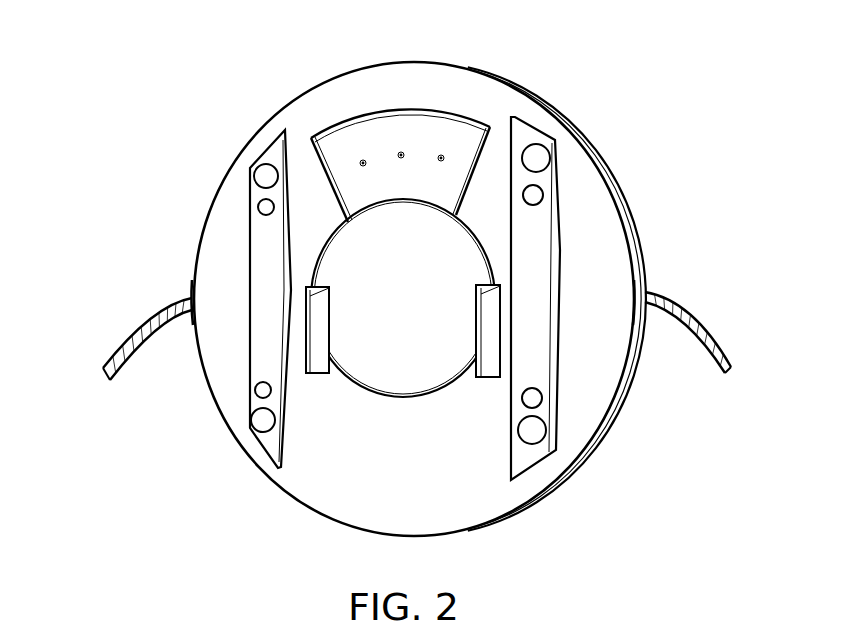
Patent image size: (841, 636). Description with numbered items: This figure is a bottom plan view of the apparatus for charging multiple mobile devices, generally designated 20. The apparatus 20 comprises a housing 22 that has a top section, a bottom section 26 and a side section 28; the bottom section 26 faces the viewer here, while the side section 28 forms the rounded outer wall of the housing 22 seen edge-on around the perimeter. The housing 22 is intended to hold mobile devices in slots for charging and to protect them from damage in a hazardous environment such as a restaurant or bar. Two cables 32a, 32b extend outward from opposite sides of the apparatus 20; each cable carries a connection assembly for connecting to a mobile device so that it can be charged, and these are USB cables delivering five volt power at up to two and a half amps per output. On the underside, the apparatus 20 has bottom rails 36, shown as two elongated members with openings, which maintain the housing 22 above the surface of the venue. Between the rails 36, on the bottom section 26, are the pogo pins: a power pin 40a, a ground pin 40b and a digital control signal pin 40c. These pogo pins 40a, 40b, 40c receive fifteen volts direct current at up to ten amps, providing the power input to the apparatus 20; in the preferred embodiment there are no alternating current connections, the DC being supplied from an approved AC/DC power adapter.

The apparatus for charging multiple mobile devices 20 is at (413, 285).
The housing 22 is at (218, 430).
The bottom section 26 is at (502, 66).
The side section 28 is at (177, 268).
The cable 32a is at (118, 347).
The cable 32b is at (707, 331).
The bottom rails 36 is at (262, 153).
The power pogo pin 40a is at (360, 163).
The ground pogo pin 40b is at (398, 155).
The digital control signal pogo pin 40c is at (438, 158).